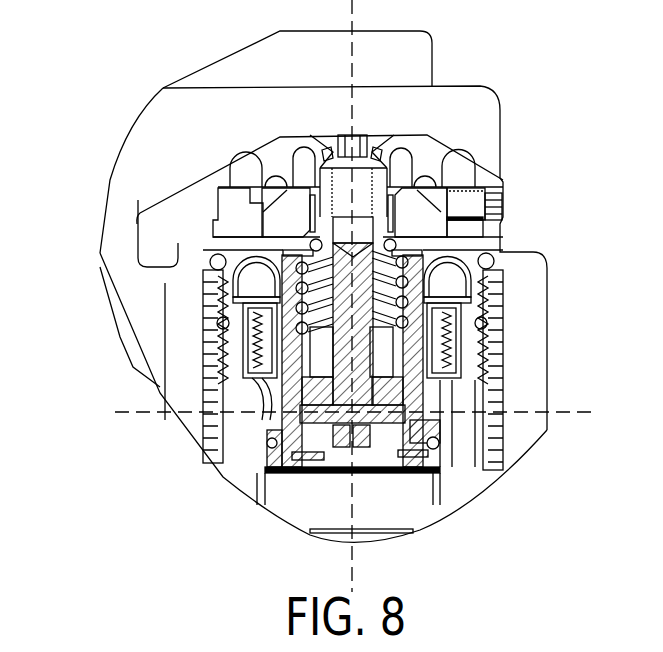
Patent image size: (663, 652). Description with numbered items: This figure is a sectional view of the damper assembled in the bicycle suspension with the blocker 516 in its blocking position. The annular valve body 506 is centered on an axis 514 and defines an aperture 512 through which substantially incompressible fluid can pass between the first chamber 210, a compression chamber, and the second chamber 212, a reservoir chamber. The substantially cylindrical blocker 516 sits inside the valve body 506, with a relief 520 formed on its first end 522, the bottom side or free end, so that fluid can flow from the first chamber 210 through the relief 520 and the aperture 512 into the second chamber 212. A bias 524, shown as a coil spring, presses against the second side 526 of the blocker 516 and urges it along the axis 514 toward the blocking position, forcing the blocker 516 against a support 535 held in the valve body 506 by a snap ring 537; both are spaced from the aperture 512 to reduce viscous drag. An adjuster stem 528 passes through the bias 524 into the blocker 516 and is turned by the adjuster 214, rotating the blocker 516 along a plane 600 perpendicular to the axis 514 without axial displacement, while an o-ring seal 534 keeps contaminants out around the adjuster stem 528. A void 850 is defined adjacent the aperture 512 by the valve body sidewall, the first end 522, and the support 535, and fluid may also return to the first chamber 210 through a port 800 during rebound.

The axis 514 is at (352, 26).
The adjuster 214 is at (487, 175).
The adjuster stem 528 is at (396, 247).
The o-ring seal 534 is at (310, 246).
The bias 524 is at (430, 288).
The second side 526 is at (465, 289).
The valve body 506 is at (452, 342).
The blocker 516 is at (415, 386).
The plane 600 is at (375, 412).
The aperture 512 is at (472, 456).
The second chamber 212 is at (478, 468).
The void 850 is at (412, 443).
The port 800 is at (455, 505).
The snap ring 537 is at (425, 455).
The first end 522 is at (383, 423).
The support 535 is at (342, 430).
The first chamber 210 is at (280, 500).
The relief 520 is at (255, 478).